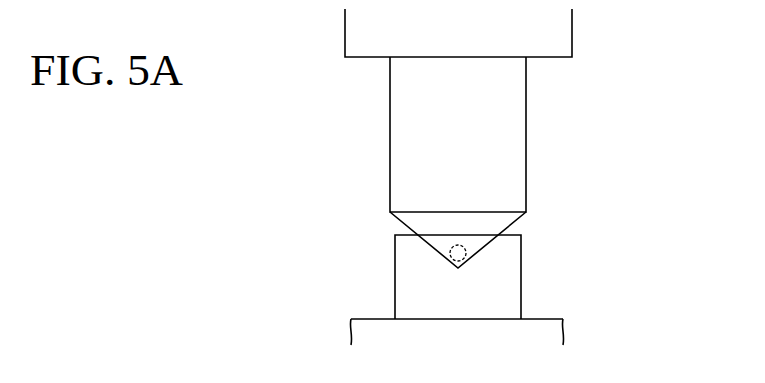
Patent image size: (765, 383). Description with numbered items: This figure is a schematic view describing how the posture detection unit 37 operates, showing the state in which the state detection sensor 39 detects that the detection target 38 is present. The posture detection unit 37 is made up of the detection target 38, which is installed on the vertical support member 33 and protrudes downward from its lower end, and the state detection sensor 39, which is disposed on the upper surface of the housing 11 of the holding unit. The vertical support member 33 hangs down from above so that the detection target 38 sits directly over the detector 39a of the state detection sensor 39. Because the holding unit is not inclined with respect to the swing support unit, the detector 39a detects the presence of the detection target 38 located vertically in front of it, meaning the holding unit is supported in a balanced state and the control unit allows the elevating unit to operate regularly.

The vertical support member 33 is at (562, 36).
The posture detection unit 37 is at (287, 90).
The detection target 38 is at (403, 118).
The state detection sensor 39 is at (400, 292).
The detector 39a is at (450, 258).
The housing 11 is at (555, 330).